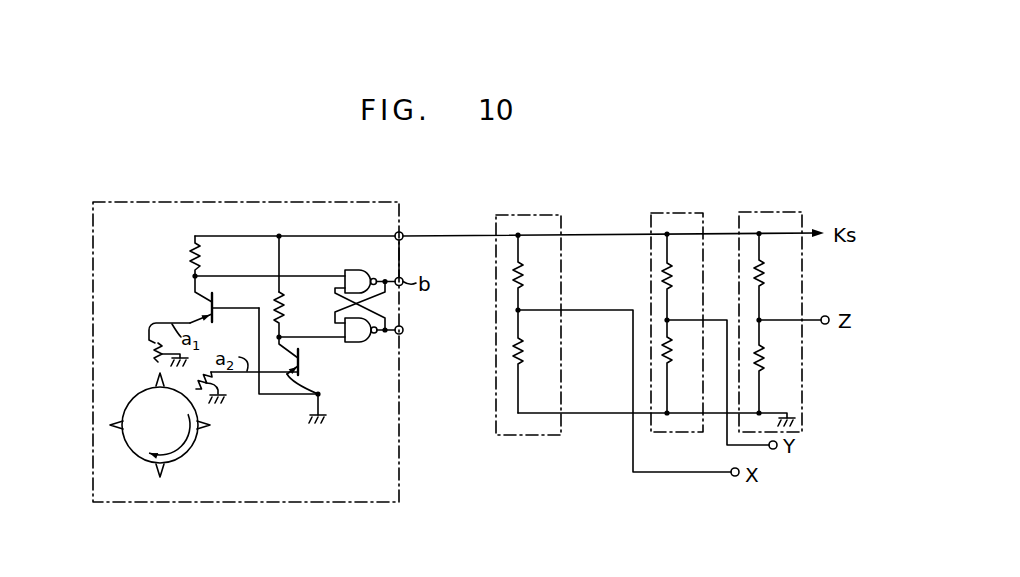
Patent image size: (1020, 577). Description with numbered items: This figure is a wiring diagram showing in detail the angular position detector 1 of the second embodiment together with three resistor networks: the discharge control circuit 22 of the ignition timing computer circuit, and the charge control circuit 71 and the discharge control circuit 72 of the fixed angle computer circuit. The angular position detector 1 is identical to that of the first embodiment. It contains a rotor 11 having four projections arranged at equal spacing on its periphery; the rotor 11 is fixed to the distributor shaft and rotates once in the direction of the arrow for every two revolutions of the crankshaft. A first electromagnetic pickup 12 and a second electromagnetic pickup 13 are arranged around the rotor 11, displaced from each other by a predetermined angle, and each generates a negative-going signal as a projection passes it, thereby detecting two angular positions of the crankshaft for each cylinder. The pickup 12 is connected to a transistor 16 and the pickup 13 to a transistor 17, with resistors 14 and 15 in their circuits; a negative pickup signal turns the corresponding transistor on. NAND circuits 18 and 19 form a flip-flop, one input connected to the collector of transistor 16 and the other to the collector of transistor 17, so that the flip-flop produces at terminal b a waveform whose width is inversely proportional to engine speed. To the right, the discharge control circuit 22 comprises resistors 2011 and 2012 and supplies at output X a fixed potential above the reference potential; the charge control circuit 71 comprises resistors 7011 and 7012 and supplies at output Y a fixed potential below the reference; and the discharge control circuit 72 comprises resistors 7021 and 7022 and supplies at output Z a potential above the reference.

The angular position detector 1 is at (404, 395).
The rotor 11 is at (127, 445).
The first electromagnetic pickup 12 is at (153, 352).
The second electromagnetic pickup 13 is at (212, 390).
The resistor 14 is at (190, 260).
The resistor 15 is at (284, 317).
The transistor 16 is at (205, 305).
The transistor 17 is at (320, 389).
The NAND circuit 18 is at (355, 270).
The NAND circuit 19 is at (355, 342).
The discharge control circuit 22 is at (543, 345).
The resistor 2011 is at (524, 274).
The resistor 2012 is at (524, 353).
The charge control circuit 71 is at (692, 340).
The resistor 7011 is at (672, 276).
The resistor 7012 is at (677, 353).
The discharge control circuit 72 is at (797, 322).
The resistor 7021 is at (765, 273).
The resistor 7022 is at (765, 363).